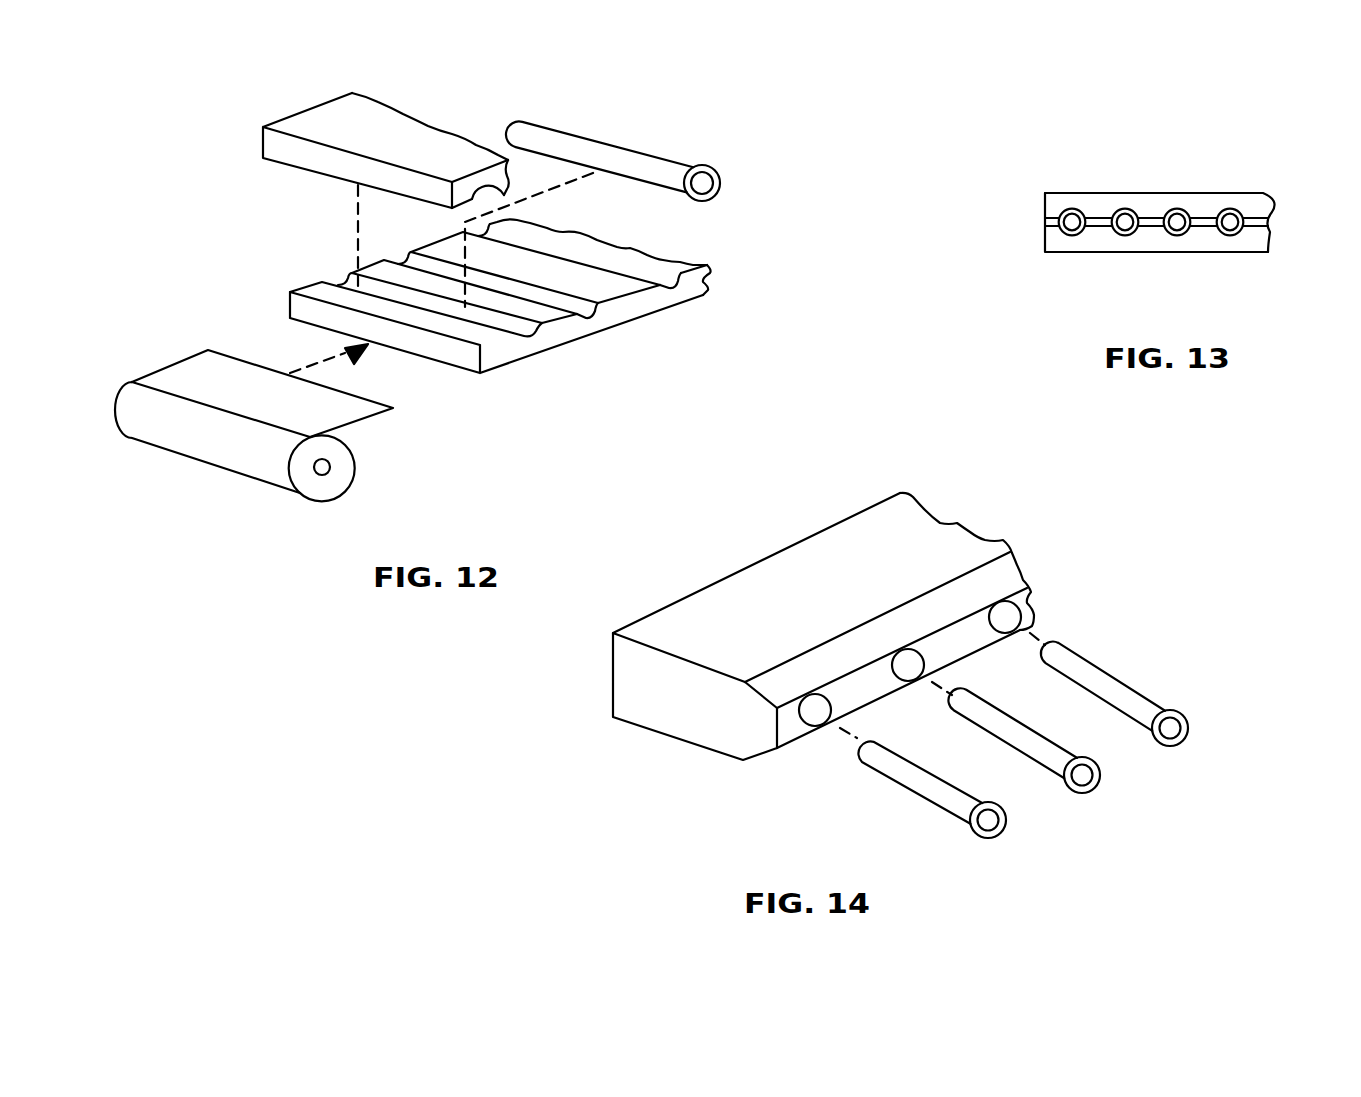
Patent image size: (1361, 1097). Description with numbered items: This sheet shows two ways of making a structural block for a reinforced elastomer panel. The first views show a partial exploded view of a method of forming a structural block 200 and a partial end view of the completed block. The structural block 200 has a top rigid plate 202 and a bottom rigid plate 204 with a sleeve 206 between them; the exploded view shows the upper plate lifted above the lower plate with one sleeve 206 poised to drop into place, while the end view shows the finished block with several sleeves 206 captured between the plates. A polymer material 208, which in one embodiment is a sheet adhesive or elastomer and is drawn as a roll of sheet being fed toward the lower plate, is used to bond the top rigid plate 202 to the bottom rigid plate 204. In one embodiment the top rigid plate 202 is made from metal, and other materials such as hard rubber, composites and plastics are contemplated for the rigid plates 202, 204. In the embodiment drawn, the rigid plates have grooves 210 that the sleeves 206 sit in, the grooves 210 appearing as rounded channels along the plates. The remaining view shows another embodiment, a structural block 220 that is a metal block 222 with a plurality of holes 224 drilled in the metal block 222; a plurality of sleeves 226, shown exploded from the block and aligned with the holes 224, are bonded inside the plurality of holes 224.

In FIG. 12, the structural block 200 is at (445, 33).
In FIG. 13, the structural block 200 is at (1143, 88).
In FIG. 12, the top rigid plate 202 is at (308, 125).
In FIG. 13, the top rigid plate 202 is at (1252, 188).
In FIG. 12, the bottom rigid plate 204 is at (458, 355).
In FIG. 13, the bottom rigid plate 204 is at (1082, 242).
In FIG. 12, the sleeve 206 is at (722, 173).
In FIG. 13, the sleeve 206 is at (1230, 208).
In FIG. 12, the polymer material 208 is at (347, 468).
In FIG. 13, the polymer material 208 is at (1262, 220).
In FIG. 12, the grooves 210 is at (500, 195).
In FIG. 14, the structural block 220 is at (730, 485).
In FIG. 14, the metal block 222 is at (632, 683).
In FIG. 14, the holes 224 is at (815, 710).
In FIG. 14, the sleeves 226 is at (1010, 838).